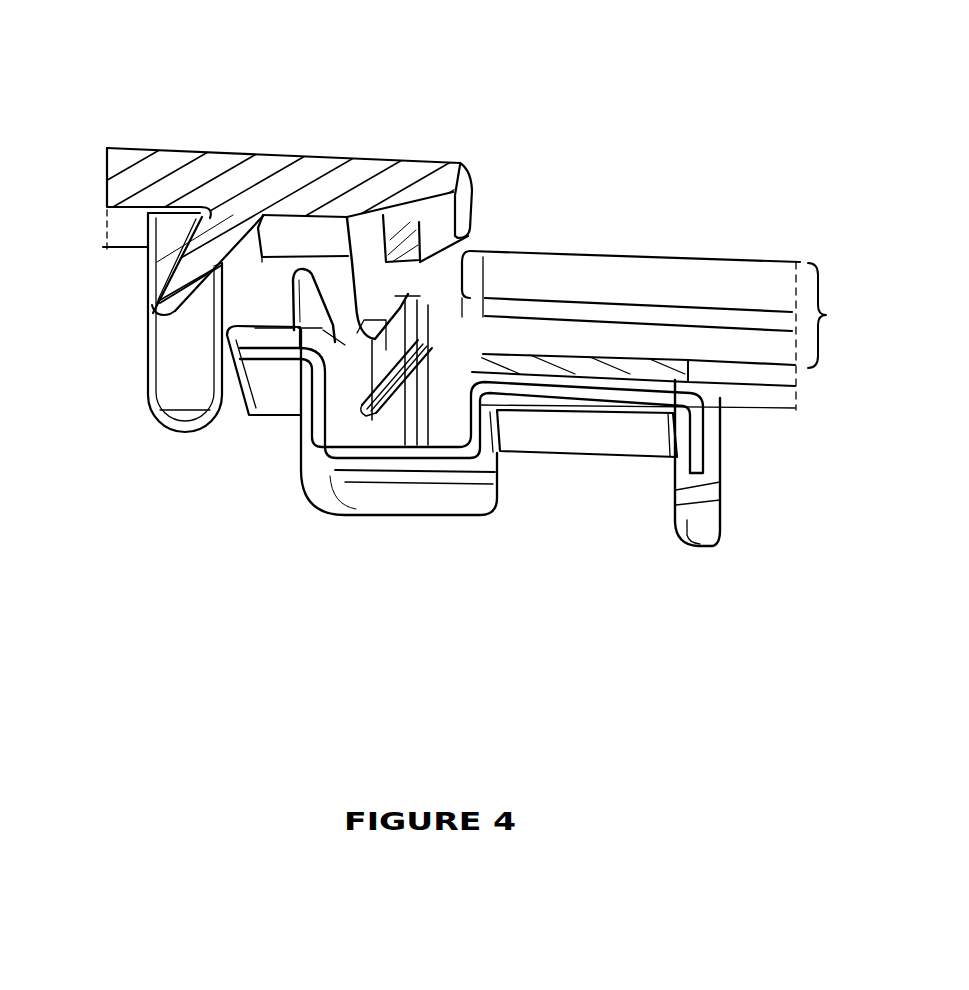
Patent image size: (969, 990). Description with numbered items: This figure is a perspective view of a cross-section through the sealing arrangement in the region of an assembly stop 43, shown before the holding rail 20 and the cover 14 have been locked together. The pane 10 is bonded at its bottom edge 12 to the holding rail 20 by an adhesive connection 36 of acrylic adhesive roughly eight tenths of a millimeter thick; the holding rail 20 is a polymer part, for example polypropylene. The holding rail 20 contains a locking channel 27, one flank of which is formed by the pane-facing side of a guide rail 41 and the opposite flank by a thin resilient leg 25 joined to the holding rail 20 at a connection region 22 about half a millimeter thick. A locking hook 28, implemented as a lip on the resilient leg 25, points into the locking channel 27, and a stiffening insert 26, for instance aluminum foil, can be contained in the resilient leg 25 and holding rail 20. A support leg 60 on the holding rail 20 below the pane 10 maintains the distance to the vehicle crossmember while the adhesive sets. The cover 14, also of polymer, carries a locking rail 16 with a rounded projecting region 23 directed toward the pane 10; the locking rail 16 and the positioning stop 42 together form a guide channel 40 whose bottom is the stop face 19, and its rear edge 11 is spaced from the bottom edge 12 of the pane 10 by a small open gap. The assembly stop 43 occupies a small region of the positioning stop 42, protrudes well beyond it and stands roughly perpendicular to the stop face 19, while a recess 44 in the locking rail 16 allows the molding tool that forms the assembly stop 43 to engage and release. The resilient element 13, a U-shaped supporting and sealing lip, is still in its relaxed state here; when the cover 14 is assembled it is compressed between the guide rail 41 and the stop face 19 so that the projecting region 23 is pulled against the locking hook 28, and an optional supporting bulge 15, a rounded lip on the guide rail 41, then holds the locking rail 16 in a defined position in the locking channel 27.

The cover 14 is at (155, 158).
The positioning stop 42 is at (197, 257).
The assembly stop 43 is at (190, 370).
The guide channel 40 is at (270, 278).
The stop face 19 is at (306, 238).
The resilient element 13 is at (308, 297).
The locking rail 16 is at (366, 288).
The projecting region 23 is at (440, 193).
The rear edge 11 is at (473, 200).
The recess 44 is at (405, 287).
The pane 10 is at (665, 330).
The bottom edge 12 is at (492, 264).
The adhesive connection 36 is at (608, 362).
The supporting bulge 15 is at (300, 415).
The guide rail 41 is at (252, 413).
The locking channel 27 is at (365, 392).
The connection region 22 is at (372, 425).
The resilient leg 25 is at (395, 410).
The locking hook 28 is at (432, 435).
The holding rail 20 is at (530, 423).
The stiffening insert 26 is at (697, 443).
The support leg 60 is at (716, 512).